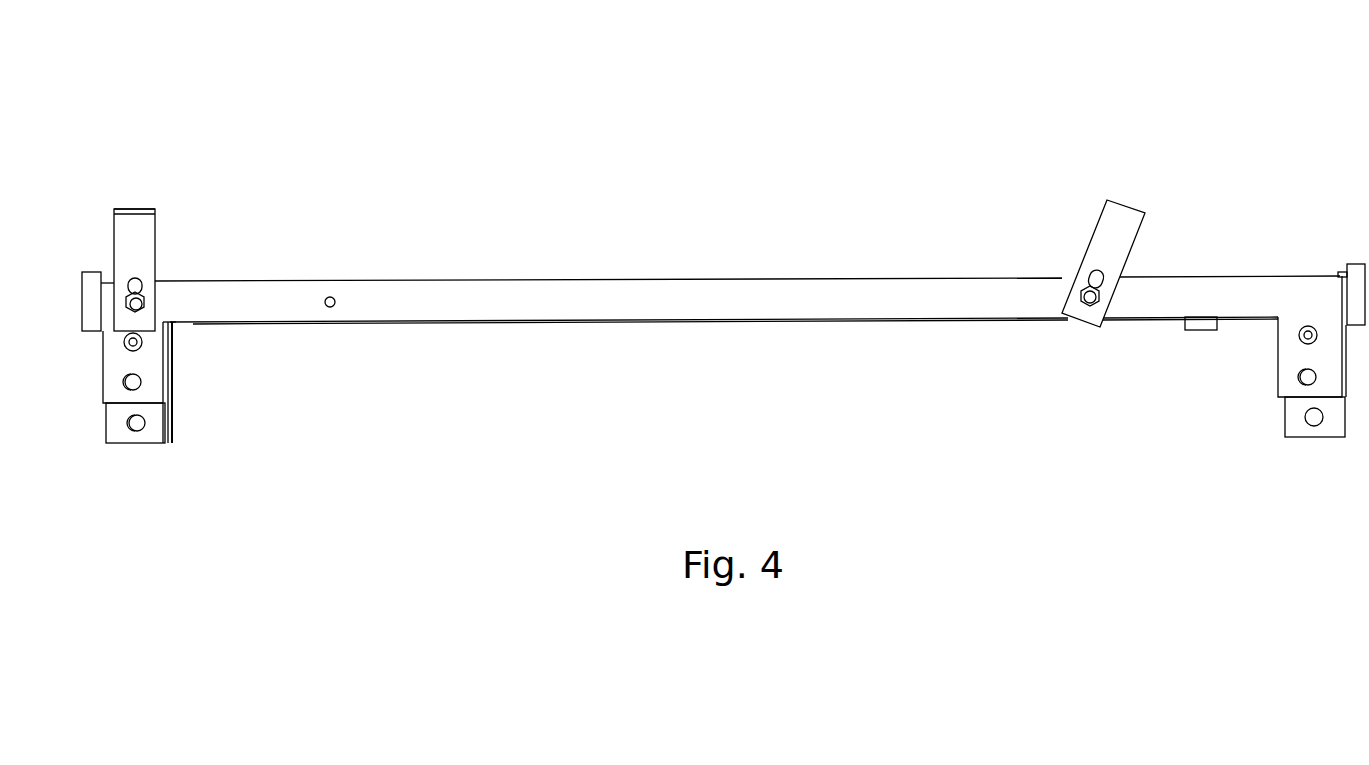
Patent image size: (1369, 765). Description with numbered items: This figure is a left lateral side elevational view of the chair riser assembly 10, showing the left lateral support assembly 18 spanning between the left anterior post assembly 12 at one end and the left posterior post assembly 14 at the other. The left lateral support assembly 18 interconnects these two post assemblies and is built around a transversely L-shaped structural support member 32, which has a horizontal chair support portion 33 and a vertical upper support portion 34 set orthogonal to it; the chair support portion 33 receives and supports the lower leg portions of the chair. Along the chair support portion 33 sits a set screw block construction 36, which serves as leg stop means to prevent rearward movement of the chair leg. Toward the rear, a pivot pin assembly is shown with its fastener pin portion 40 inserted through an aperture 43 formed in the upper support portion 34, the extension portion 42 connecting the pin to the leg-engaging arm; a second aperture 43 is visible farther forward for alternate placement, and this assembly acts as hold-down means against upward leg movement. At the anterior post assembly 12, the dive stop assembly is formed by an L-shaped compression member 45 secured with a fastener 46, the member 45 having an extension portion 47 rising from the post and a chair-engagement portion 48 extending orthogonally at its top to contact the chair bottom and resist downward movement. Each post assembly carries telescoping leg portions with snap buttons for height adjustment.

The chair riser assembly 10 is at (1108, 95).
The left anterior post assembly 12 is at (137, 465).
The left posterior post assembly 14 is at (1305, 475).
The left lateral support assembly 18 is at (663, 398).
The L-shaped structural support member 32 is at (470, 322).
The chair support portion 33 is at (848, 320).
The upper support portion 34 is at (554, 300).
The set screw block construction 36 is at (1192, 331).
The fastener pin portion 40 is at (1085, 302).
The extension portion 42 is at (1092, 232).
The aperture 43 is at (333, 310).
The L-shaped compression member 45 is at (157, 210).
The fastener 46 is at (130, 308).
The extension portion 47 is at (132, 266).
The chair-engagement portion 48 is at (138, 207).